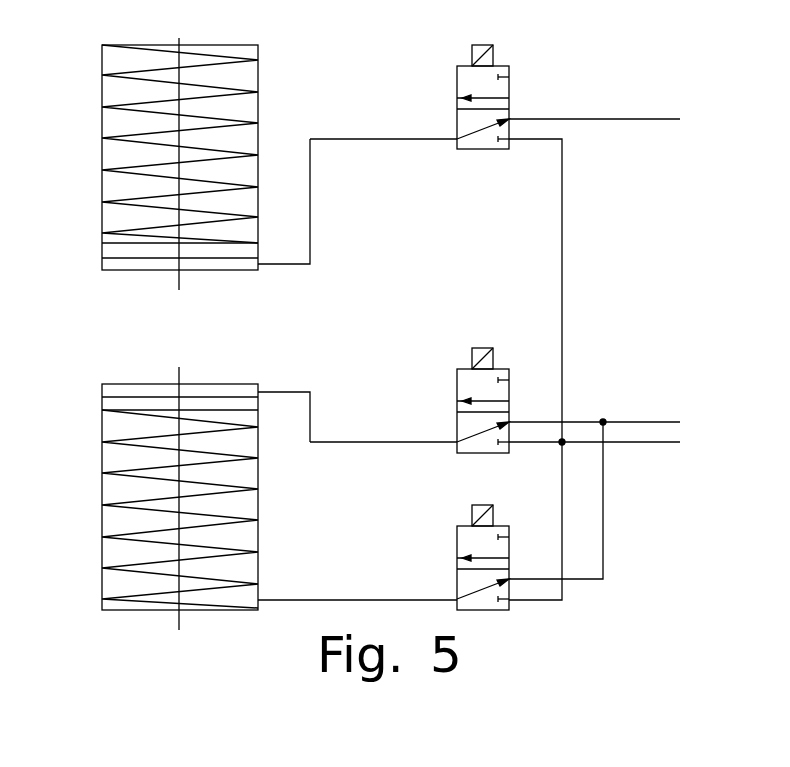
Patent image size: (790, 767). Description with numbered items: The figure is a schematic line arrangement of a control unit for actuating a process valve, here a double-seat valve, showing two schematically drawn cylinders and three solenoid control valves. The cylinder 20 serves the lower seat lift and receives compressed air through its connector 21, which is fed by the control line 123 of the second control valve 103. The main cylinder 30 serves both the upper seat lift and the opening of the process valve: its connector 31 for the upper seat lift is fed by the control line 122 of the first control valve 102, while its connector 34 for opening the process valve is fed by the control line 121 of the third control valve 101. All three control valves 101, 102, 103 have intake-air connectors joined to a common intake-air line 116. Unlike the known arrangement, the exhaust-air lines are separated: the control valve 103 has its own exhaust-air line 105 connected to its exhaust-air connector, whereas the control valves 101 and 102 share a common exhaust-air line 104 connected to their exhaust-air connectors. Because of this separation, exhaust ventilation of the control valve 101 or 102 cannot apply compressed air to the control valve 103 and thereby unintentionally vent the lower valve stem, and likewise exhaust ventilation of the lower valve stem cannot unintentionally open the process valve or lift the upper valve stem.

The cylinder 20 is at (112, 148).
The connector 21 is at (260, 267).
The main cylinder 30 is at (110, 465).
The connector 31 is at (260, 597).
The connector 34 is at (262, 388).
The control valve 101 is at (472, 385).
The control valve 102 is at (472, 547).
The control valve 103 is at (483, 143).
The exhaust-air line 104 is at (630, 422).
The exhaust-air line 105 is at (628, 119).
The intake-air line 116 is at (562, 256).
The control line 121 is at (385, 440).
The control line 122 is at (388, 600).
The control line 123 is at (398, 139).